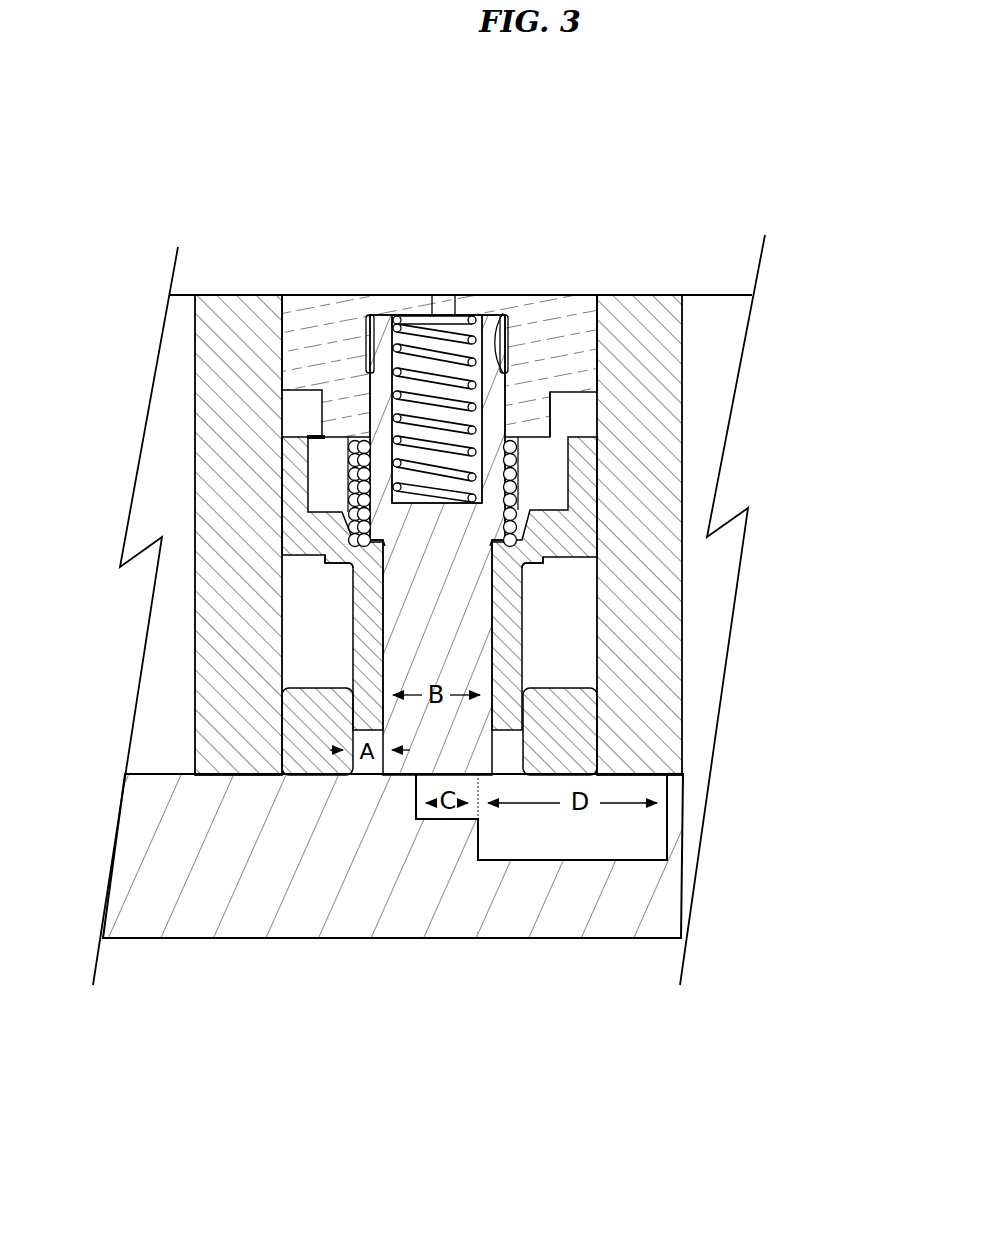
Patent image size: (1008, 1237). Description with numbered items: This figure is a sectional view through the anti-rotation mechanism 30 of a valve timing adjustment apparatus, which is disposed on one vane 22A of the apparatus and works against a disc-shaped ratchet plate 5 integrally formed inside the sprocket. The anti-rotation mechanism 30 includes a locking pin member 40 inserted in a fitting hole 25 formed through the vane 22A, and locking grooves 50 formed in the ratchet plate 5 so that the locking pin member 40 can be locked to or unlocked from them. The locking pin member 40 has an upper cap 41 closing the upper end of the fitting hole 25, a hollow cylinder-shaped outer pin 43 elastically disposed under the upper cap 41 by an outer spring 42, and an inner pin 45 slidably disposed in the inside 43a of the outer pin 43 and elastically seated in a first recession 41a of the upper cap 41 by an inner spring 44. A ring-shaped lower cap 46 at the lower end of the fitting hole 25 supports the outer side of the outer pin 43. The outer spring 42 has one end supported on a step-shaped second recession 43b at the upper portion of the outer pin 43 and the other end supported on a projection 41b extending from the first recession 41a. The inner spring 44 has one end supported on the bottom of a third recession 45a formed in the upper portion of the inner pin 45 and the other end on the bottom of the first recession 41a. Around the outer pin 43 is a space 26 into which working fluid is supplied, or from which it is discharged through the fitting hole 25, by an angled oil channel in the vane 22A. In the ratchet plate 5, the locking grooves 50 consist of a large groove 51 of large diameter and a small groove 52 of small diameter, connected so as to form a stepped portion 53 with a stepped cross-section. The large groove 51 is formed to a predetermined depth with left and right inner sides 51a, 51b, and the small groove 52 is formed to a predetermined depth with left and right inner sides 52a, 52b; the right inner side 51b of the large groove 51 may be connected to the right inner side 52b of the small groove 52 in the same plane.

The ratchet plate 5 is at (683, 883).
The vane 22A is at (257, 513).
The fitting hole 25 is at (593, 320).
The space 26 is at (562, 602).
The anti-rotation mechanism 30 is at (212, 370).
The locking pin member 40 is at (270, 270).
The upper cap 41 is at (330, 323).
The first recession 41a is at (503, 312).
The projection 41b is at (535, 417).
The outer spring 42 is at (357, 453).
The outer pin 43 is at (357, 590).
The inside of the outer pin 43a is at (592, 579).
The second recession 43b is at (546, 554).
The inner spring 44 is at (410, 332).
The inner pin 45 is at (453, 627).
The third recession 45a is at (453, 323).
The lower cap 46 is at (563, 723).
The locking grooves 50 is at (554, 870).
The large groove 51 is at (590, 787).
The left inner side of the large groove 51a is at (416, 795).
The right inner side of the large groove 51b is at (667, 790).
The small groove 52 is at (583, 840).
The left inner side of the small groove 52a is at (477, 838).
The right inner side of the small groove 52b is at (667, 850).
The stepped portion 53 is at (420, 805).